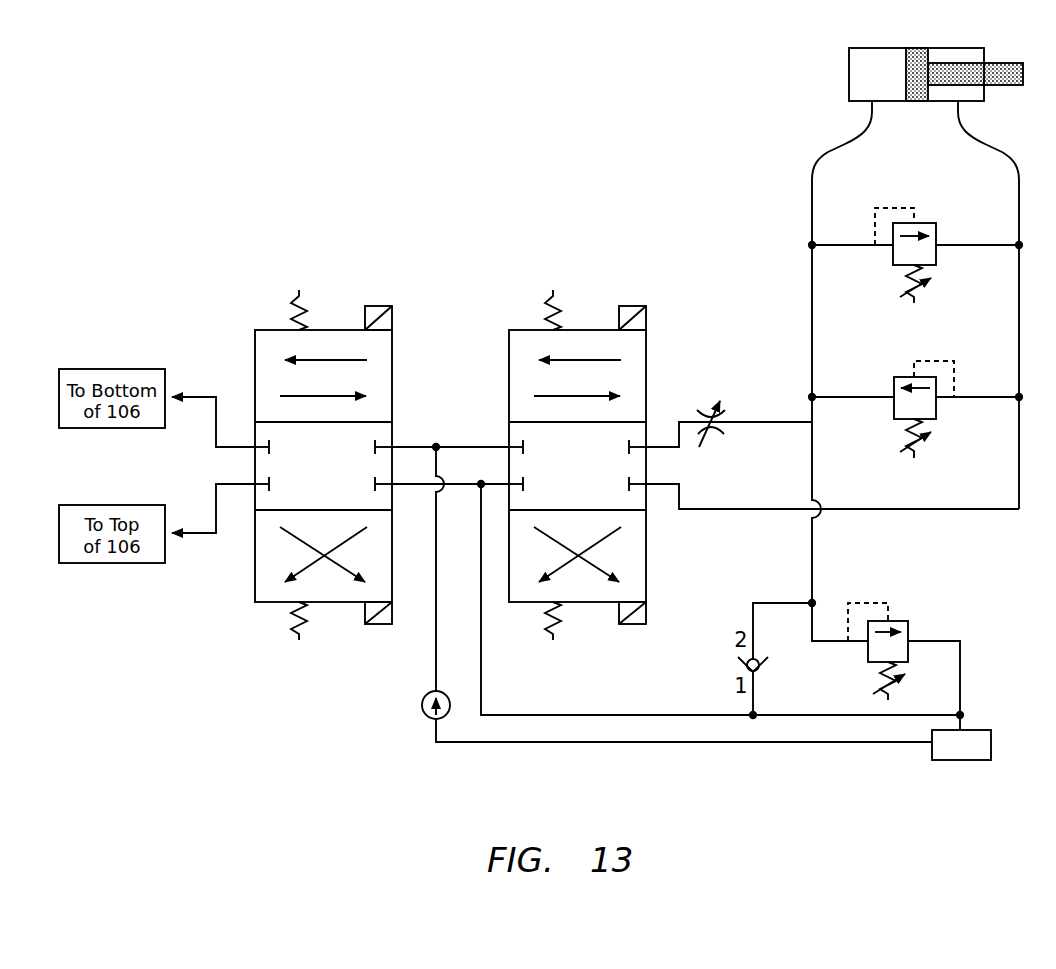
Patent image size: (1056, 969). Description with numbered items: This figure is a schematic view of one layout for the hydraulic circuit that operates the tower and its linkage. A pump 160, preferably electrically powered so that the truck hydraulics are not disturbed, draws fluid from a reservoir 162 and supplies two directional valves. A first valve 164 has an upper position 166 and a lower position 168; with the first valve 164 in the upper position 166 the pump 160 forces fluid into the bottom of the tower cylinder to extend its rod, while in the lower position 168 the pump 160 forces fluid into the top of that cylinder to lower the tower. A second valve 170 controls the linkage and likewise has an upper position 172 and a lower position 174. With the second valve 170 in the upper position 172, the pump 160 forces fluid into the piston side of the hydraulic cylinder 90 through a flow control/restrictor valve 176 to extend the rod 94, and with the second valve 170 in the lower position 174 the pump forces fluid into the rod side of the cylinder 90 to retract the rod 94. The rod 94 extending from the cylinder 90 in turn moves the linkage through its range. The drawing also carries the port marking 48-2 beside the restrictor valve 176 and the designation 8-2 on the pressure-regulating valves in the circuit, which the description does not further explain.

The hydraulic cylinder 90 is at (870, 46).
The rod 94 is at (1003, 60).
The pump 160 is at (421, 702).
The reservoir 162 is at (993, 745).
The first valve 164 is at (333, 449).
The upper position 166 is at (378, 368).
The lower position 168 is at (270, 597).
The second valve 170 is at (582, 448).
The upper position 172 is at (518, 386).
The lower position 174 is at (634, 572).
The flow control/restrictor valve 176 is at (722, 371).
The needle valve port 48-2 is at (700, 420).
The pressure regulator valve 8-2 is at (915, 455).